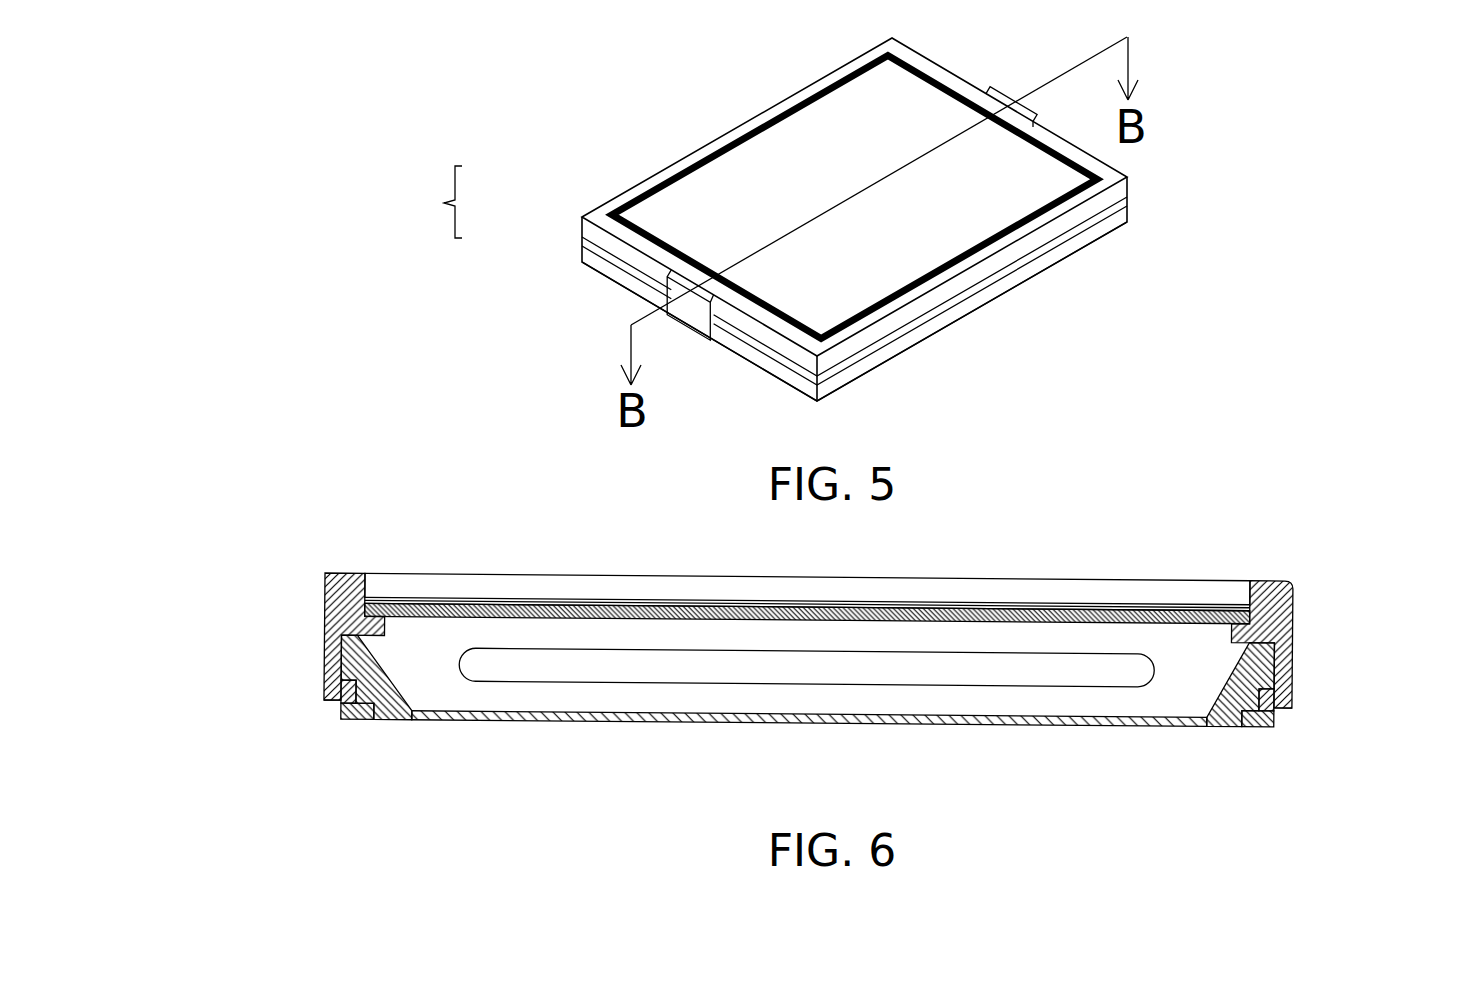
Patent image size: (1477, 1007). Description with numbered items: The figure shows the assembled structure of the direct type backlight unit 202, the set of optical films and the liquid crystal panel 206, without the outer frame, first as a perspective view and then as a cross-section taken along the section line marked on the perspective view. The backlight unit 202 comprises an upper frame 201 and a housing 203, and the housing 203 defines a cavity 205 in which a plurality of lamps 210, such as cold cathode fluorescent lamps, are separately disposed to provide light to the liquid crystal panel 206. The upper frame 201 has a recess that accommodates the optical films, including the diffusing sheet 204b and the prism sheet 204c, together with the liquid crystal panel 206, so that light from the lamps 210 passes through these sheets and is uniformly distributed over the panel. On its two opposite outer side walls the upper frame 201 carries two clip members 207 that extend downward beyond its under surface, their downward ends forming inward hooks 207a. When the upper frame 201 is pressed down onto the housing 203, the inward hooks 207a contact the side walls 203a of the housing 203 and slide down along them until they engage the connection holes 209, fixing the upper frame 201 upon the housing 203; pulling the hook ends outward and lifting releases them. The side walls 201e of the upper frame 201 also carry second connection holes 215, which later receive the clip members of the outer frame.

In FIG. 5, the upper frame 201 is at (582, 228).
In FIG. 6, the upper frame 201 is at (382, 582).
In FIG. 5, the side walls 201e is at (632, 187).
In FIG. 5, the direct type backlight unit 202 is at (425, 202).
In FIG. 5, the housing 203 is at (582, 252).
In FIG. 6, the housing 203 is at (372, 719).
In FIG. 6, the side walls 203a is at (338, 703).
In FIG. 6, the diffusing sheet 204b is at (366, 614).
In FIG. 6, the prism sheet 204c is at (362, 606).
In FIG. 6, the cavity 205 is at (445, 683).
In FIG. 5, the liquid crystal panel 206 is at (693, 193).
In FIG. 6, the liquid crystal panel 206 is at (365, 600).
In FIG. 5, the clip members 207 is at (1005, 95).
In FIG. 6, the clip members 207 is at (343, 643).
In FIG. 6, the inward hook 207a is at (340, 688).
In FIG. 6, the connection hole 209 is at (342, 712).
In FIG. 6, the lamps 210 is at (652, 672).
In FIG. 5, the second connection holes 215 is at (968, 282).